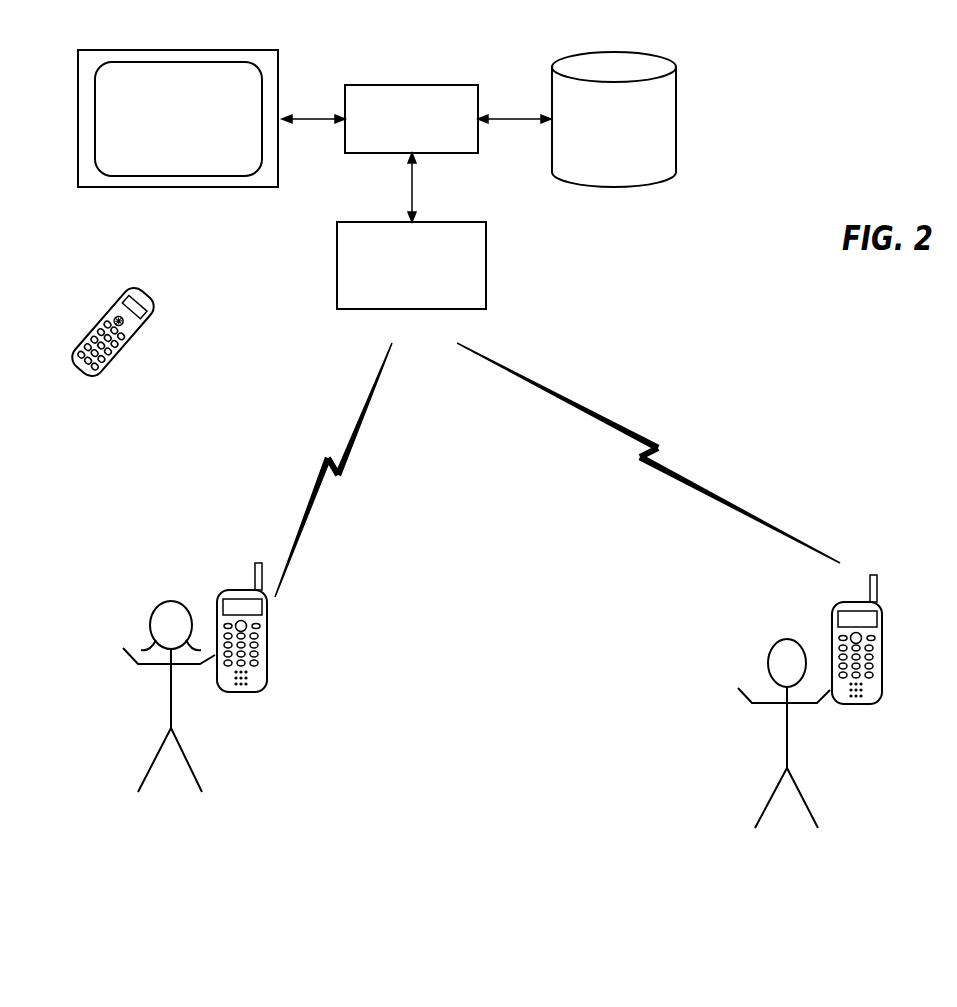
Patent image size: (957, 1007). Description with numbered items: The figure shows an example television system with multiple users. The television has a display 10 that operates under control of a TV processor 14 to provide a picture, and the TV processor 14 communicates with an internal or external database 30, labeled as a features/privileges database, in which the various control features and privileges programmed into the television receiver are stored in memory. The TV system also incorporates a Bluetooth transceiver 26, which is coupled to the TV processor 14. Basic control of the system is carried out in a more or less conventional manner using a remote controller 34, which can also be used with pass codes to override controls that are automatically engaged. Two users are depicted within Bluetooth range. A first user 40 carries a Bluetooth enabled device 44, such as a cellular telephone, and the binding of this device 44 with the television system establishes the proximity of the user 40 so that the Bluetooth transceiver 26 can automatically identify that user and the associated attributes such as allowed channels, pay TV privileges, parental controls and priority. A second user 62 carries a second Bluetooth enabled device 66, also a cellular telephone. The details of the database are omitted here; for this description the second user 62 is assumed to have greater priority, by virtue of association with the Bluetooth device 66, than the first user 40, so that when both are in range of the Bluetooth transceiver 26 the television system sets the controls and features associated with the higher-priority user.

The display 10 is at (177, 50).
The TV processor 14 is at (412, 85).
The database 30 is at (615, 52).
The Bluetooth transceiver 26 is at (486, 265).
The remote controller 34 is at (93, 320).
The user 40 is at (172, 602).
The Bluetooth enabled device 44 is at (267, 640).
The second user 62 is at (787, 640).
The Bluetooth device 66 is at (883, 652).